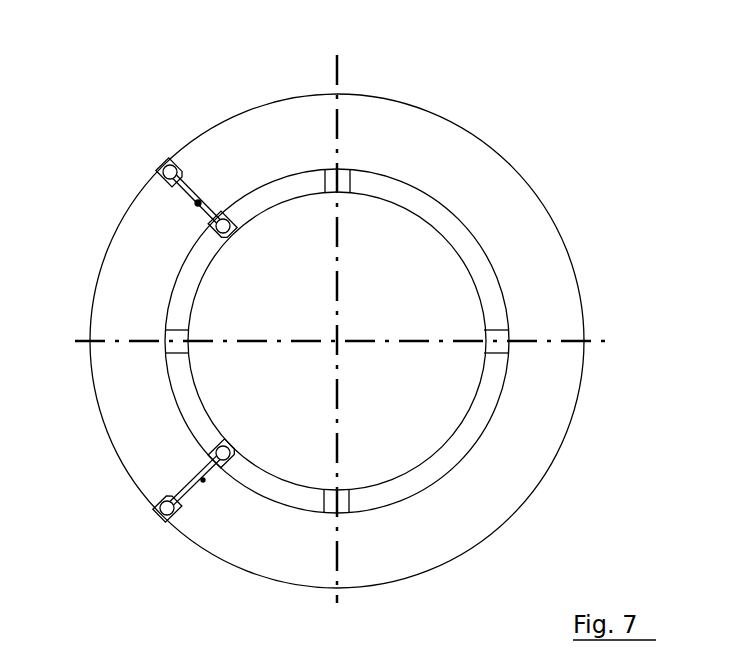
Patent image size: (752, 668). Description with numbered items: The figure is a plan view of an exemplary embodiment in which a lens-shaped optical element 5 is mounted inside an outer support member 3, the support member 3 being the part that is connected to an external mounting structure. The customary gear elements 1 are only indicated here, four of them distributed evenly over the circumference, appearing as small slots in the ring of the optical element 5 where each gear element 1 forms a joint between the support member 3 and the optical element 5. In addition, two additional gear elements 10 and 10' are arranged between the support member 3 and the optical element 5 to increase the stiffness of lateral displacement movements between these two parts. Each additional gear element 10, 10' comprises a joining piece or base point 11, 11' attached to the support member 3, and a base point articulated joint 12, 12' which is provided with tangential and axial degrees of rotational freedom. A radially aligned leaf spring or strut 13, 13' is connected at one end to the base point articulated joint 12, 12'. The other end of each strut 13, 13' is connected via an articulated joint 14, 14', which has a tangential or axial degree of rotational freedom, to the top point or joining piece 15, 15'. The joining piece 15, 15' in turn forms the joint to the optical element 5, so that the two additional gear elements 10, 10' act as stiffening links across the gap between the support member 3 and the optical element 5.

The gear element 1 is at (343, 502).
The support member 3 is at (425, 157).
The optical element 5 is at (222, 396).
The additional gear element 10 is at (118, 512).
The joining piece or base point 11 is at (183, 556).
The base point articulated joint 12 is at (135, 548).
The leaf spring or strut 13 is at (228, 514).
The articulated joint 14 is at (254, 419).
The joining piece 15 is at (303, 439).
The additional gear element 10' is at (127, 209).
The joining piece or base point 11' is at (122, 168).
The base point articulated joint 12' is at (109, 102).
The strut 13' is at (164, 108).
The articulated joint 14' is at (241, 120).
The joining piece 15' is at (287, 124).